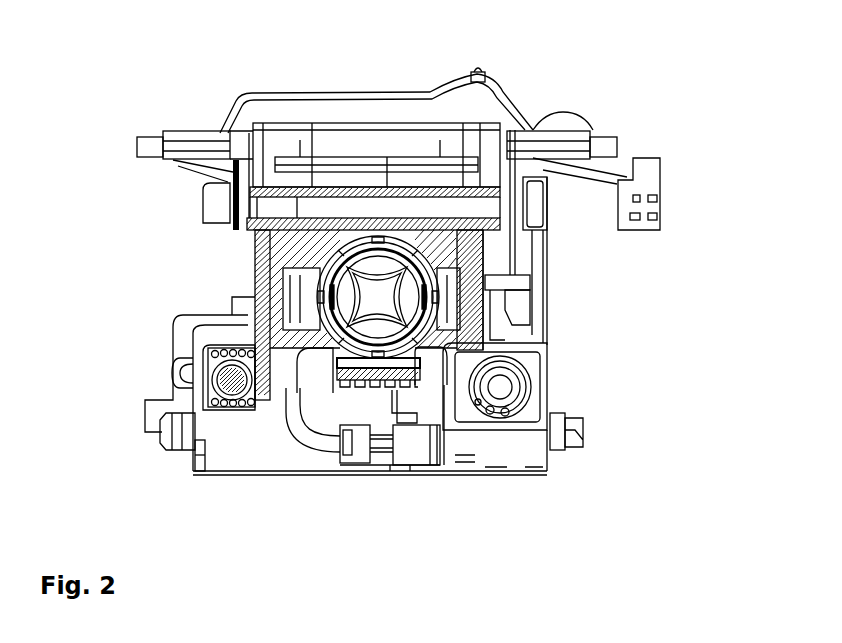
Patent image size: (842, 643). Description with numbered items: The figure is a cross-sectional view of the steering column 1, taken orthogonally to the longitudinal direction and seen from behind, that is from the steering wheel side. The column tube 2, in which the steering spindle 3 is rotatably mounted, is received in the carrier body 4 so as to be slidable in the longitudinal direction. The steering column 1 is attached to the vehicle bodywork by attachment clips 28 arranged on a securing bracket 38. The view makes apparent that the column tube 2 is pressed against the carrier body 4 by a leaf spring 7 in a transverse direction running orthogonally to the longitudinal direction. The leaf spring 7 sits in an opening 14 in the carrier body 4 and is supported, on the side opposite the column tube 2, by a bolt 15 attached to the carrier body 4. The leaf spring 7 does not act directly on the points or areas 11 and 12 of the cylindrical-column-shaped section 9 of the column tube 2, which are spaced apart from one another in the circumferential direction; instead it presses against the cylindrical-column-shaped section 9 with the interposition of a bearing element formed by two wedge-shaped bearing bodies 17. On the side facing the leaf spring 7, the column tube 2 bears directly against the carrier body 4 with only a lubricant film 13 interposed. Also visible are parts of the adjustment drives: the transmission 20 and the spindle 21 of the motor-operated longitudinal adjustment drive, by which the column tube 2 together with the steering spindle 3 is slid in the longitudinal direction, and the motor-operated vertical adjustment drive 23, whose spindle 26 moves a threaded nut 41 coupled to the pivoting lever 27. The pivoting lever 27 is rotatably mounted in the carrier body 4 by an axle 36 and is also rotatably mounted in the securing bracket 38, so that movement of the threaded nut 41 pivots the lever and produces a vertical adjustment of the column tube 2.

The steering column 1 is at (178, 265).
The column tube 2 is at (208, 345).
The steering spindle 3 is at (440, 272).
The carrier body 4 is at (527, 347).
The leaf spring 7 is at (430, 392).
The cylindrical-column-shaped section 9 is at (463, 310).
The point or area 11 is at (315, 388).
The point or area 12 is at (415, 388).
The lubricant film 13 is at (523, 130).
The opening 14 is at (355, 390).
The bolt 15 is at (378, 392).
The bearing bodies 17 is at (335, 388).
The transmission 20 is at (523, 382).
The spindle 21 is at (510, 397).
The motor-operated vertical adjustment drive 23 is at (512, 483).
The spindle 26 is at (205, 452).
The pivoting lever 27 is at (205, 362).
The attachment clips 28 is at (182, 130).
The axle 36 is at (365, 205).
The securing bracket 38 is at (330, 112).
The threaded nut 41 is at (160, 430).